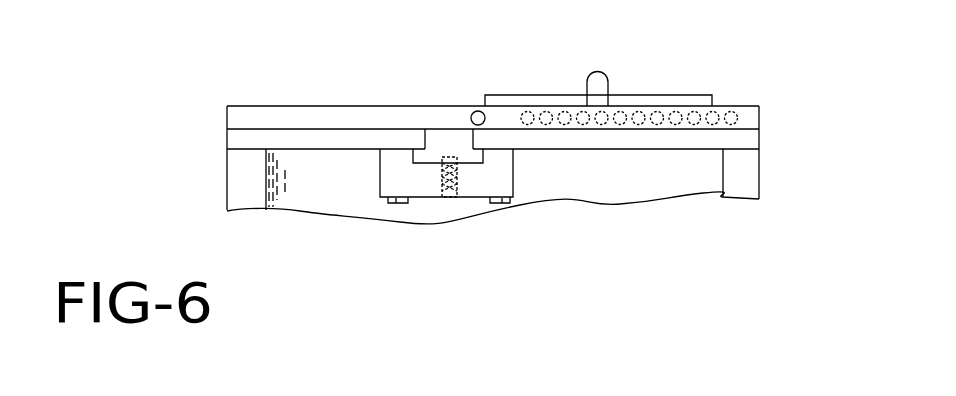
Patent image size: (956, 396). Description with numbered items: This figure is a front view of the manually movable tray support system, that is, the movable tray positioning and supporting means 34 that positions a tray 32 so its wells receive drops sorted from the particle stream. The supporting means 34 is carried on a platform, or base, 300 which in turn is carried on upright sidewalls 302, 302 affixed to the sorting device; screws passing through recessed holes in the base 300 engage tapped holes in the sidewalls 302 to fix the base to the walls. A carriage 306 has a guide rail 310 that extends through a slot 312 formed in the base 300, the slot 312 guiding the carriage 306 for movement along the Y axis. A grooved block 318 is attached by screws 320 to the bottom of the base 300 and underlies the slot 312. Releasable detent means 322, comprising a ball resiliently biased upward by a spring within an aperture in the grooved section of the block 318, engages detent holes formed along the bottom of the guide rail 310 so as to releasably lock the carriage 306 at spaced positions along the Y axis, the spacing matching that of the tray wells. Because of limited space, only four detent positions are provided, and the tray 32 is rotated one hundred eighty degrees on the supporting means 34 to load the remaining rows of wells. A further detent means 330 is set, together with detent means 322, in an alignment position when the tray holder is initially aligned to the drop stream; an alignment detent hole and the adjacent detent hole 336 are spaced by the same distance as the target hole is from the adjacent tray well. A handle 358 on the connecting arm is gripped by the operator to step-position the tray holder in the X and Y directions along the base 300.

The tray 32 is at (657, 91).
The movable tray positioning and supporting means 34 is at (760, 100).
The platform, or base 300 is at (227, 138).
The sidewalls 302 is at (227, 182).
The carriage 306 is at (266, 103).
The guide rail 310 is at (426, 150).
The slot 312 is at (425, 143).
The grooved block 318 is at (380, 171).
The screws 320 is at (388, 200).
The releasable detent means 322 is at (449, 204).
The detent means 330 is at (472, 108).
The detent hole 336 is at (670, 126).
The handle 358 is at (600, 70).